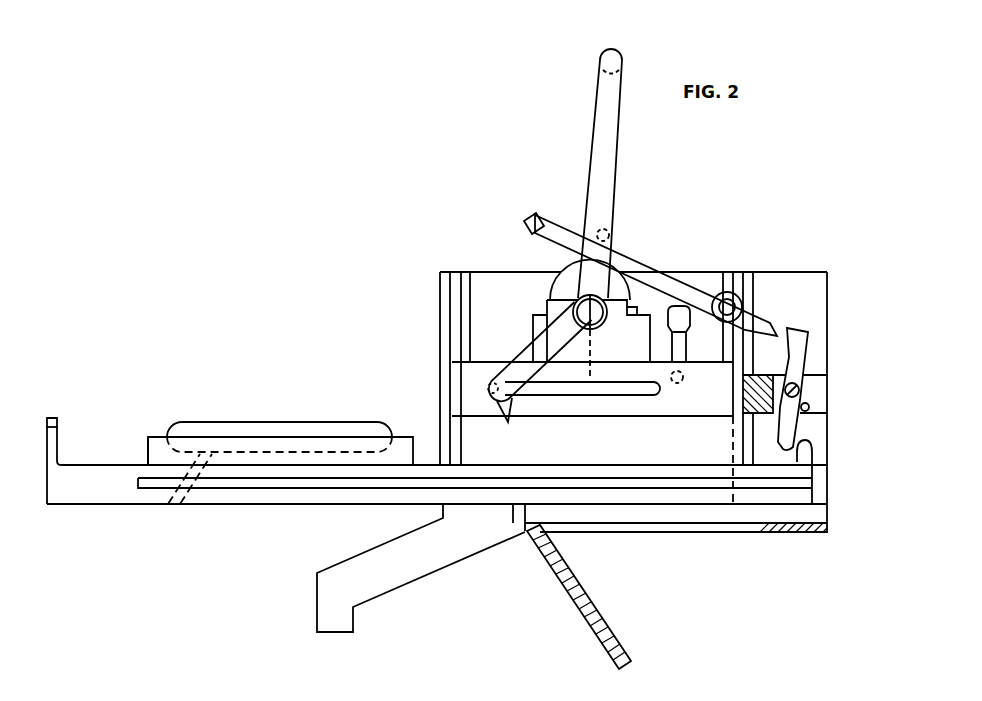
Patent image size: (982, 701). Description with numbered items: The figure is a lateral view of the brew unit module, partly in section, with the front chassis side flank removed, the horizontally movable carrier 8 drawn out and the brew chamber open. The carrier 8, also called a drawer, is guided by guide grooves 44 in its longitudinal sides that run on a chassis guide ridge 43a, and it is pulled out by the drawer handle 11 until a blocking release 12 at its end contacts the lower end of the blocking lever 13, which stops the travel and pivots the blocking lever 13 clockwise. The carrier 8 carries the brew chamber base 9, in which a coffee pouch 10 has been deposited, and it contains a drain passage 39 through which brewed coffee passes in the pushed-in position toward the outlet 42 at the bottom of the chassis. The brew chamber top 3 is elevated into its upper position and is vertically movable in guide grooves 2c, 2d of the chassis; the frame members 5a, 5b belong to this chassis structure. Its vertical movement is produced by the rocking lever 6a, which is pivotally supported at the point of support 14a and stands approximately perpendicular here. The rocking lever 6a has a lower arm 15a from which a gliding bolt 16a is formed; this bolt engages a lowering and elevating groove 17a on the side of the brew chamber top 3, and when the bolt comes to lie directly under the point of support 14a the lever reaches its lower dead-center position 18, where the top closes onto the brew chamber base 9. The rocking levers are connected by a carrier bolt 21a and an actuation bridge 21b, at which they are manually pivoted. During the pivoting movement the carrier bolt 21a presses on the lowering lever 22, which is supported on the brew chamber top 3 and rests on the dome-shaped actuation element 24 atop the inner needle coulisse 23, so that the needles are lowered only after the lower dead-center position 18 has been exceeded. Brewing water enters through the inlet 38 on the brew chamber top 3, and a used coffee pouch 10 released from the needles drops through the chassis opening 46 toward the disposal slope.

The guide groove 2c is at (452, 320).
The guide groove 2d is at (739, 273).
The brew chamber top 3 is at (470, 375).
The frame part 5a is at (456, 392).
The frame part 5b is at (737, 398).
The rocking lever 6a is at (605, 110).
The carrier 8 is at (95, 490).
The brew chamber base 9 is at (150, 444).
The coffee pouch 10 is at (220, 428).
The drawer handle 11 is at (52, 426).
The blocking release 12 is at (797, 455).
The blocking lever 13 is at (795, 328).
The point of support 14a is at (578, 305).
The lower arm 15a is at (530, 358).
The gliding bolt 16a is at (488, 408).
The lowering and elevating groove 17a is at (637, 396).
The lower dead-center position 18 is at (590, 398).
The carrier bolt 21a is at (606, 241).
The actuation bridge 21b is at (600, 59).
The lowering lever 22 is at (543, 228).
The inner needle coulisse 23 is at (541, 302).
The dome-shaped actuation element 24 is at (560, 276).
The inlet 38 is at (678, 305).
The drain passage 39 is at (185, 500).
The outlet 42 is at (403, 567).
The chassis guide ridge 43a is at (818, 482).
The guide groove 44 is at (246, 490).
The chassis opening 46 is at (640, 533).